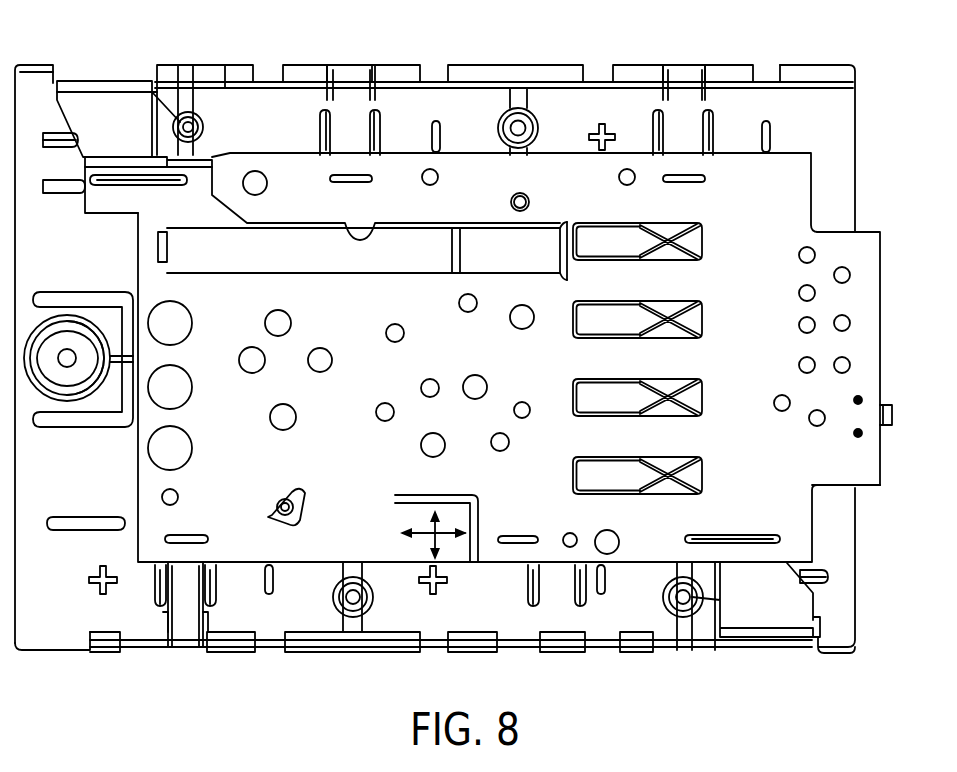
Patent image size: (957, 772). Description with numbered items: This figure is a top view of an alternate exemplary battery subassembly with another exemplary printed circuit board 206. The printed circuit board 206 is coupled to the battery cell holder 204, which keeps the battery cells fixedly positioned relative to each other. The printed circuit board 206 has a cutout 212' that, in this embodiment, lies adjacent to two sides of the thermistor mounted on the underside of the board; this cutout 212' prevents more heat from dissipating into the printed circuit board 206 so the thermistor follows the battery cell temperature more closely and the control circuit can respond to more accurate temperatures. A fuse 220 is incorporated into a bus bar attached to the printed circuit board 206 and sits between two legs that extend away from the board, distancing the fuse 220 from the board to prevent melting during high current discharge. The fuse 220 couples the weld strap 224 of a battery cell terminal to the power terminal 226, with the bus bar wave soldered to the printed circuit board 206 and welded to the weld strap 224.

The battery cell holder 204 is at (790, 108).
The printed circuit board 206 is at (822, 452).
The printed circuit board cutout 212' is at (504, 600).
The fuse 220 is at (322, 250).
The weld strap 224 is at (113, 133).
The power terminal 226 is at (593, 218).